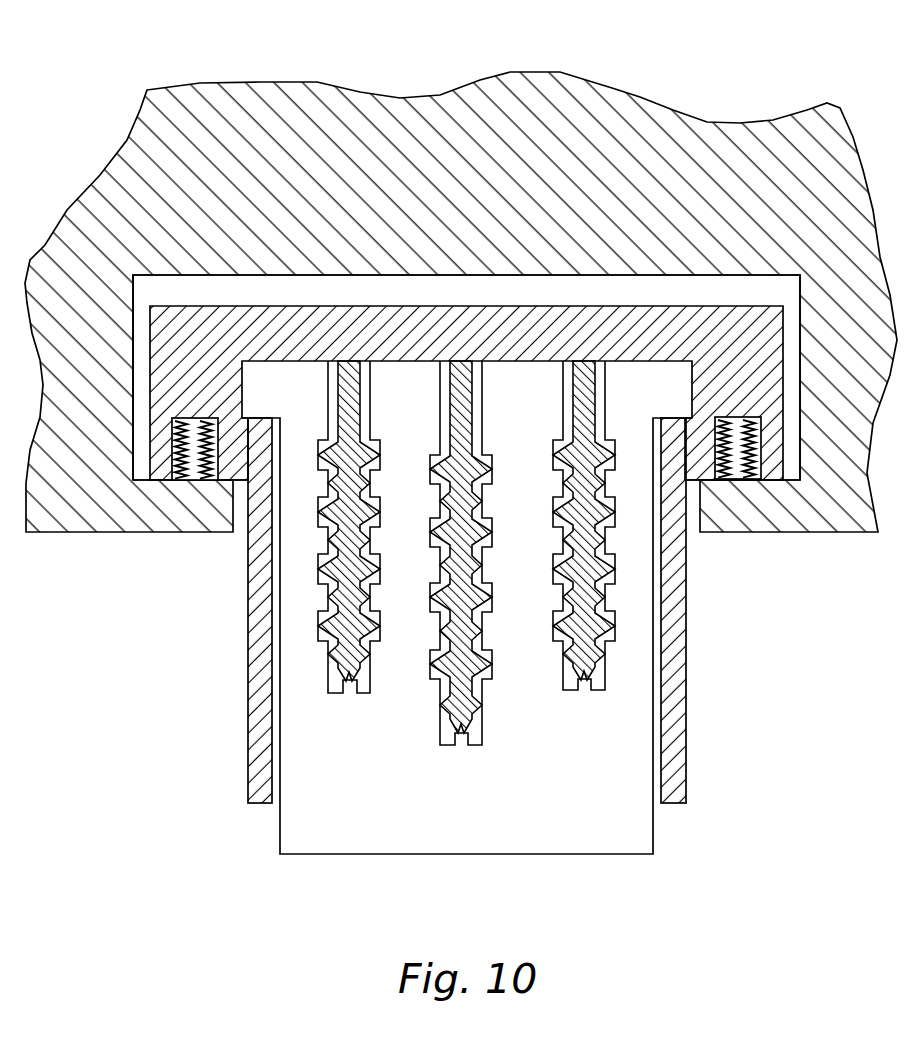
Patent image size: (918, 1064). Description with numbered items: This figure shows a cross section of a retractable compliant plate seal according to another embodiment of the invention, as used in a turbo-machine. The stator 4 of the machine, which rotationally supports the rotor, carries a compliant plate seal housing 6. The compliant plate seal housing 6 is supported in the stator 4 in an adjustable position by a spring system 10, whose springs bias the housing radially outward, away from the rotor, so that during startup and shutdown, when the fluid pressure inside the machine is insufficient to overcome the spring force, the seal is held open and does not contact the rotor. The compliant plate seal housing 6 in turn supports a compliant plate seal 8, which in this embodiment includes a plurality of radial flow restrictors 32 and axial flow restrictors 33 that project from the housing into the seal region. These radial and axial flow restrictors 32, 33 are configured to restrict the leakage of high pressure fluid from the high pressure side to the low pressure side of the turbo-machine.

The stator 4 is at (272, 128).
The compliant plate seal housing 6 is at (560, 332).
The compliant plate seal 8 is at (603, 822).
The spring system 10 is at (200, 460).
The radial flow restrictors 32 is at (335, 599).
The axial flow restrictors 33 is at (482, 638).